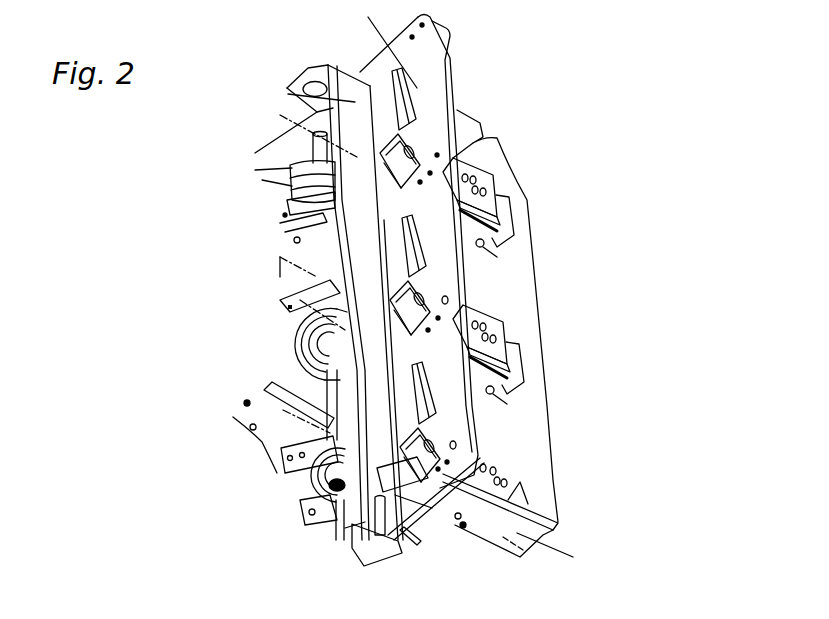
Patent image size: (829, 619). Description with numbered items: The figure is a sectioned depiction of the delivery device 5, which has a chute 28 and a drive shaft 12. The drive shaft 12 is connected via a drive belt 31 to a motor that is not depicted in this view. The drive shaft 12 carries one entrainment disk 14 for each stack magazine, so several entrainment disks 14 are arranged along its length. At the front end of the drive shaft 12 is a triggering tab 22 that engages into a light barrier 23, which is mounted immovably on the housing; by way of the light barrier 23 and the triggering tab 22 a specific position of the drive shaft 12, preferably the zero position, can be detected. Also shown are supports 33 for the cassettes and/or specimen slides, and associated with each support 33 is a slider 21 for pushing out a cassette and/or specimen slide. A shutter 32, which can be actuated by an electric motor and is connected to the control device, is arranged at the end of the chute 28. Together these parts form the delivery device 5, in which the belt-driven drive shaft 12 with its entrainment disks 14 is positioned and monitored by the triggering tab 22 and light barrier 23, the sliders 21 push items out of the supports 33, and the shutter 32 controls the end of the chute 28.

The delivery device 5 is at (516, 86).
The drive shaft 12 is at (337, 253).
The entrainment disk 14 is at (300, 172).
The slider 21 is at (490, 175).
The triggering tab 22 is at (312, 508).
The light barrier 23 is at (340, 510).
The chute 28 is at (287, 88).
The drive belt 31 is at (262, 380).
The shutter 32 is at (427, 503).
The support 33 is at (397, 138).